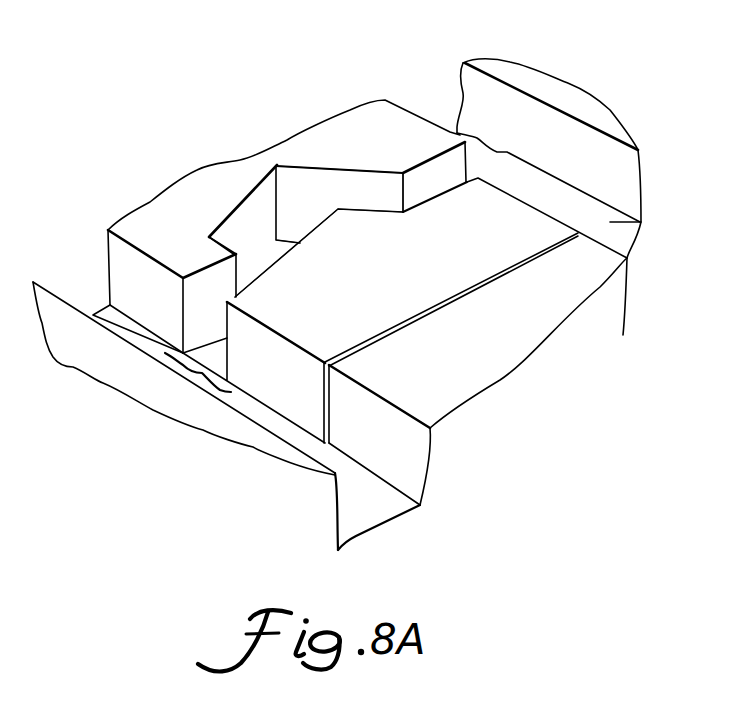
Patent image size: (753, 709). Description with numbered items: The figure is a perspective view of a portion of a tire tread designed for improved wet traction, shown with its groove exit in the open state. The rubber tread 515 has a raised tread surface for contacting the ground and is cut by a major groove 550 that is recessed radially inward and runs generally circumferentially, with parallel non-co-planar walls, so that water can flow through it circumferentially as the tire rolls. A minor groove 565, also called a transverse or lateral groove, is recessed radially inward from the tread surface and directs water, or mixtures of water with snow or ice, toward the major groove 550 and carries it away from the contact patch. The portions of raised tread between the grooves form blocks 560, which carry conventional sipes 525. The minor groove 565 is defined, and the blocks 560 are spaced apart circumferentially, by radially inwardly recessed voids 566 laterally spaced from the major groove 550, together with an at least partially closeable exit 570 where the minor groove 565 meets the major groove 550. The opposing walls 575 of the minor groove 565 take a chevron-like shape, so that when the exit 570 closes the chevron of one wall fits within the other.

The rubber tread 515 is at (536, 420).
The sipes 525 is at (437, 309).
The major groove 550 is at (362, 508).
The blocks 560 is at (197, 240).
The minor groove 565 is at (330, 158).
The radially inwardly recessed voids 566 is at (268, 267).
The at least partially closeable exit 570 is at (197, 372).
The opposing walls 575 is at (365, 187).